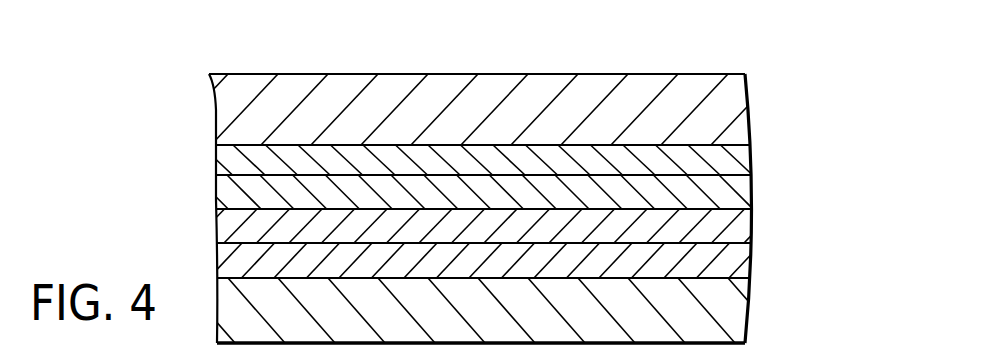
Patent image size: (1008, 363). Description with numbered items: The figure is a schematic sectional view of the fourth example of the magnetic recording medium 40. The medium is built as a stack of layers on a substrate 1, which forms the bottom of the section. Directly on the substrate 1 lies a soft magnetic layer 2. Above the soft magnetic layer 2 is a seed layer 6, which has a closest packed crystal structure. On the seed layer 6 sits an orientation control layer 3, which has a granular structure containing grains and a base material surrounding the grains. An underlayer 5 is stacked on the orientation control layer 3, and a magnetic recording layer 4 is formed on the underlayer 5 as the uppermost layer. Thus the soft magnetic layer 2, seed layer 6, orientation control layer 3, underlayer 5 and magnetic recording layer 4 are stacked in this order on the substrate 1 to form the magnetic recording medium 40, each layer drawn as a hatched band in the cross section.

The magnetic recording medium 40 is at (805, 88).
The substrate 1 is at (728, 313).
The soft magnetic layer 2 is at (737, 268).
The orientation control layer 3 is at (735, 197).
The magnetic recording layer 4 is at (735, 110).
The underlayer 5 is at (737, 165).
The seed layer 6 is at (733, 233).